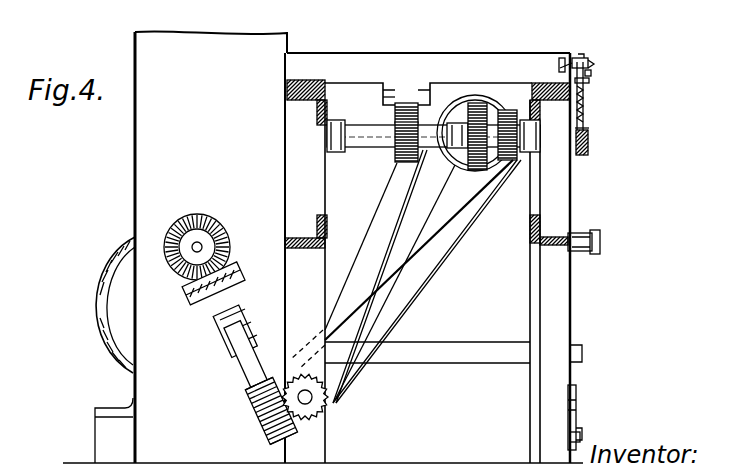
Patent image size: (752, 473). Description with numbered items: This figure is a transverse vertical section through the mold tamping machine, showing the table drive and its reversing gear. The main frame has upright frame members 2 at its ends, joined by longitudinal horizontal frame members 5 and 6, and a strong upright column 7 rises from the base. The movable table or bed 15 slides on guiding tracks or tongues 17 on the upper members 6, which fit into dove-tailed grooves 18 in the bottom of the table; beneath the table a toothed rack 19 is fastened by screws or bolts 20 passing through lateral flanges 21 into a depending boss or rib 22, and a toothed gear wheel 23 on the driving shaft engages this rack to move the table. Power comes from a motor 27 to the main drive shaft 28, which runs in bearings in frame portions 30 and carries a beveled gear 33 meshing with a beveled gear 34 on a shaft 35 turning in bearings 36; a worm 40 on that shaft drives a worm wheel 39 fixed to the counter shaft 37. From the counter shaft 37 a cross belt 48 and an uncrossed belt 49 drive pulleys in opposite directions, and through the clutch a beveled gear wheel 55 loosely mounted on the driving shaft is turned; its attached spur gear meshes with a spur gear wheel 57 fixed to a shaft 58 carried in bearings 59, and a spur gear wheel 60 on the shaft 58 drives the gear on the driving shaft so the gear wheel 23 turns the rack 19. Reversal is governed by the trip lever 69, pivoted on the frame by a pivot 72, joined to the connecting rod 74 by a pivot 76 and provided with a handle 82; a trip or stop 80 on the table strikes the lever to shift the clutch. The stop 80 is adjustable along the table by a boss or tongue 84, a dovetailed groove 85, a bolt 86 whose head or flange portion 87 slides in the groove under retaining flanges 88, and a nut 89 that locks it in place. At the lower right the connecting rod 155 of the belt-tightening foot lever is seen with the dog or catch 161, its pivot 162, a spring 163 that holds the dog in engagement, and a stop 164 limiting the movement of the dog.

The upright frame members 2 is at (548, 420).
The longitudinal horizontal frame members 5 is at (318, 225).
The longitudinal horizontal frame members 6 is at (295, 103).
The upright column 7 is at (283, 50).
The movable table or bed 15 is at (452, 53).
The guiding tracks or tongues 17 is at (303, 80).
The dove-tailed slots or grooves 18 is at (320, 83).
The toothed rack 19 is at (412, 103).
The screws or bolts 20 is at (388, 98).
The lateral flanges 21 is at (433, 80).
The depending boss or rib 22 is at (393, 97).
The toothed gear wheel 23 is at (400, 162).
The motor 27 is at (110, 297).
The main drive shaft 28 is at (200, 243).
The frame portions 30 is at (153, 383).
The beveled gear 33 is at (192, 216).
The beveled gear 34 is at (186, 285).
The shaft 35 is at (255, 350).
The bearings 36 is at (240, 312).
The counter shaft 37 is at (312, 400).
The worm wheel 39 is at (322, 415).
The worm 40 is at (262, 420).
The cross belt 48 is at (400, 263).
The belt 49 is at (410, 300).
The beveled gear wheel 55 is at (455, 165).
The spur gear wheel 57 is at (470, 172).
The shaft 58 is at (362, 132).
The bearings 59 is at (338, 152).
The spur gear wheel 60 is at (510, 162).
The trip lever 69 is at (585, 95).
The pivot 72 is at (600, 242).
The connecting rod 74 is at (620, 138).
The pivot 76 is at (590, 140).
The trip or stop 80 is at (580, 60).
The handle 82 is at (585, 90).
The boss or tongue 84 is at (589, 80).
The dovetailed groove 85 is at (562, 60).
The bolt 86 is at (591, 72).
The head or flange portion 87 is at (560, 68).
The flanges 88 is at (578, 56).
The nut 89 is at (592, 64).
The connecting rod 155 is at (462, 362).
The dog or catch 161 is at (576, 392).
The pivot 162 is at (580, 438).
The spring 163 is at (576, 418).
The stop 164 is at (582, 433).